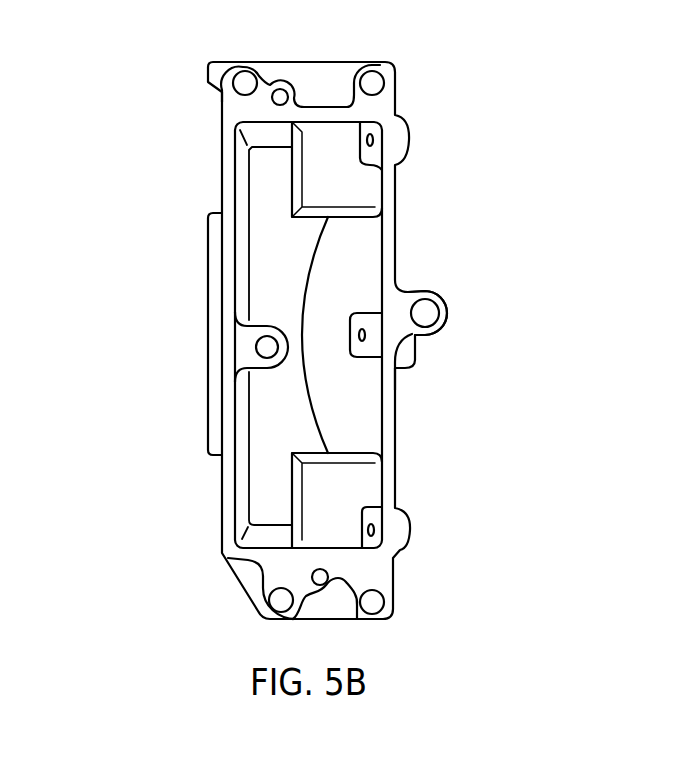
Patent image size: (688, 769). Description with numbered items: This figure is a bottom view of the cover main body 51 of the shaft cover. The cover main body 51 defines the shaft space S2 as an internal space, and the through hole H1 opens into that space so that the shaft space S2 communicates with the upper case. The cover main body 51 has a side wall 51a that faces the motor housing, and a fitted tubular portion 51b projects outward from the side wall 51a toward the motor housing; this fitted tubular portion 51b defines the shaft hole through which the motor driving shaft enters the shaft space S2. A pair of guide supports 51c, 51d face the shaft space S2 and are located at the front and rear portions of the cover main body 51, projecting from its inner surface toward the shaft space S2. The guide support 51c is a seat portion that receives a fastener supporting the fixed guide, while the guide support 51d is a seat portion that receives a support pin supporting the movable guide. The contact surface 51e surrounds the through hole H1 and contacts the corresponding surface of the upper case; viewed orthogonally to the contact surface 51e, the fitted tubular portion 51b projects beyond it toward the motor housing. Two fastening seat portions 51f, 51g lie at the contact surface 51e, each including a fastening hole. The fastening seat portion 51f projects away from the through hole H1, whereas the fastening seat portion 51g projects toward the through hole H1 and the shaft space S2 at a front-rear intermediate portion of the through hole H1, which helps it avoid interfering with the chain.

The cover main body 51 is at (130, 108).
The side wall 51a is at (222, 155).
The fitted tubular portion 51b is at (208, 253).
The guide support 51c is at (350, 493).
The guide support 51d is at (338, 187).
The contact surface 51e is at (225, 477).
The fastening seat portion 51f is at (428, 288).
The fastening seat portion 51g is at (260, 315).
The through hole H1 is at (365, 415).
The shaft space S2 is at (265, 497).